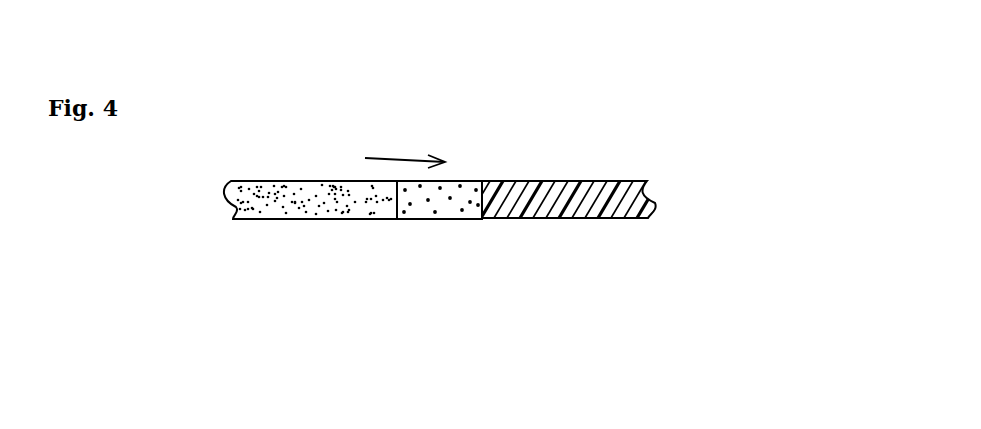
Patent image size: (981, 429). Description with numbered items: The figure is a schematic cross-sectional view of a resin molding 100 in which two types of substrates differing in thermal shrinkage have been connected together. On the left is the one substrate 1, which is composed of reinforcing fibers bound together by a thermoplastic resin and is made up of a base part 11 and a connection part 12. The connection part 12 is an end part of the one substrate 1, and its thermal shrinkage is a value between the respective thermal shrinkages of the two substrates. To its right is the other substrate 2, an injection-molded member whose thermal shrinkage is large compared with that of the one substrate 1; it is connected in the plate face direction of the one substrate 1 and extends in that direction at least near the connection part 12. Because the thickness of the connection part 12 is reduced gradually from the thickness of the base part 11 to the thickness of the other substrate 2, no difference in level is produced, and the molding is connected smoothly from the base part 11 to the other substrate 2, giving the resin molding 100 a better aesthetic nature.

The resin molding 100 is at (478, 120).
The one substrate 1 is at (448, 297).
The base part 11 is at (327, 212).
The connection part 12 is at (438, 212).
The other substrate 2 is at (558, 212).